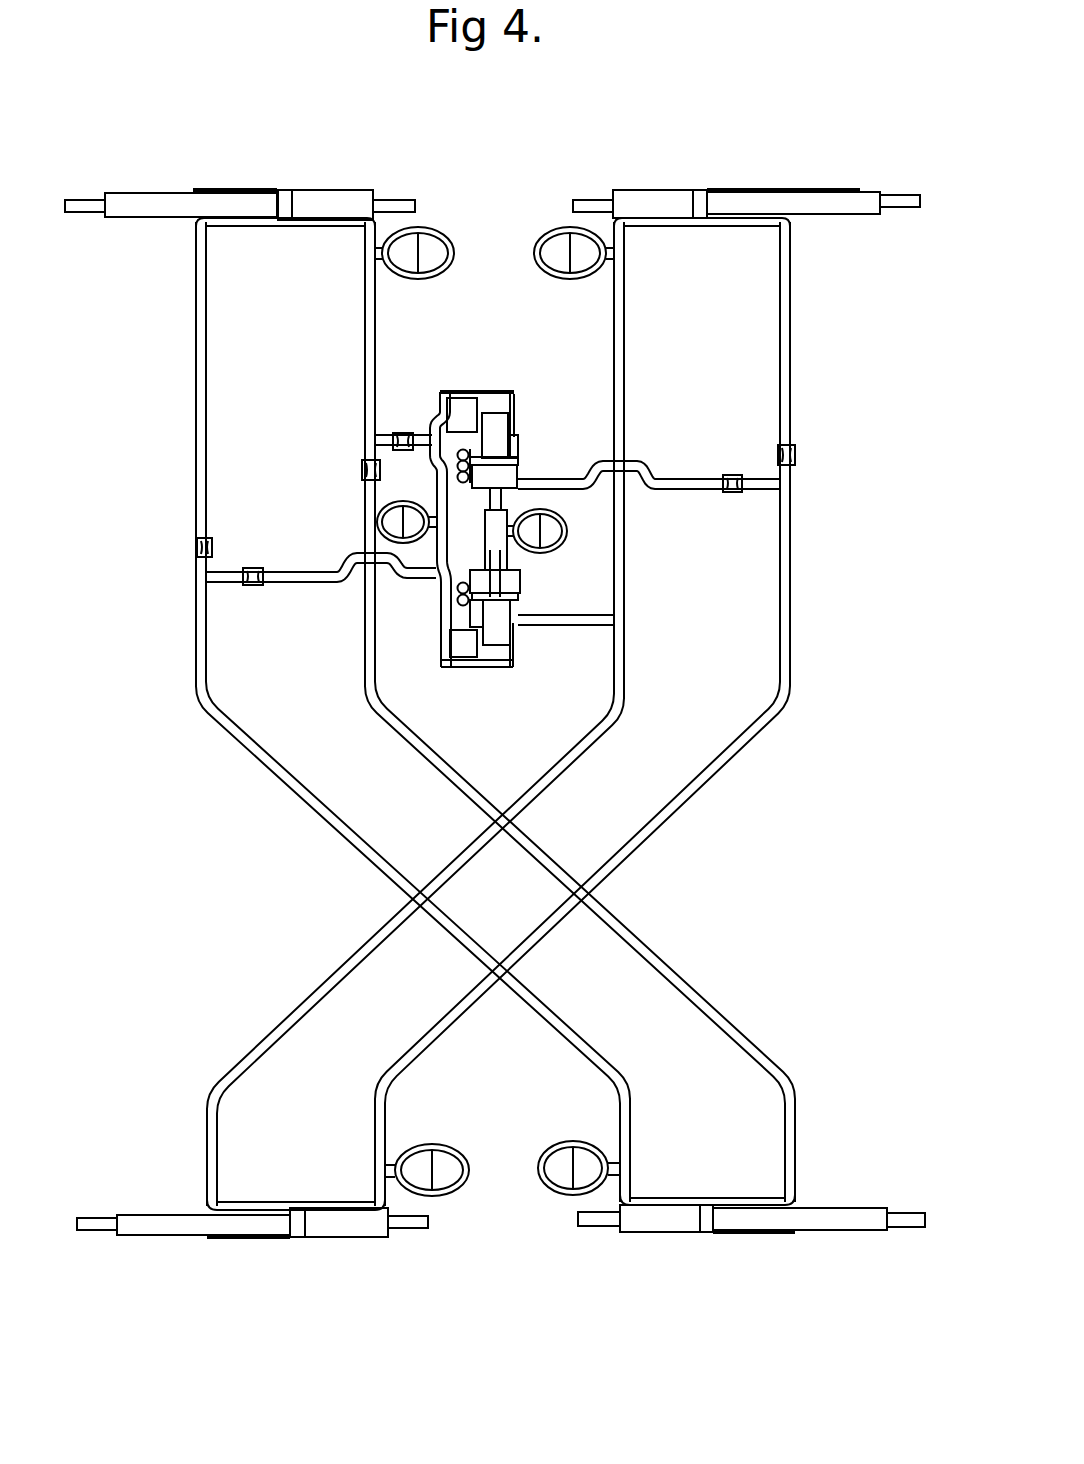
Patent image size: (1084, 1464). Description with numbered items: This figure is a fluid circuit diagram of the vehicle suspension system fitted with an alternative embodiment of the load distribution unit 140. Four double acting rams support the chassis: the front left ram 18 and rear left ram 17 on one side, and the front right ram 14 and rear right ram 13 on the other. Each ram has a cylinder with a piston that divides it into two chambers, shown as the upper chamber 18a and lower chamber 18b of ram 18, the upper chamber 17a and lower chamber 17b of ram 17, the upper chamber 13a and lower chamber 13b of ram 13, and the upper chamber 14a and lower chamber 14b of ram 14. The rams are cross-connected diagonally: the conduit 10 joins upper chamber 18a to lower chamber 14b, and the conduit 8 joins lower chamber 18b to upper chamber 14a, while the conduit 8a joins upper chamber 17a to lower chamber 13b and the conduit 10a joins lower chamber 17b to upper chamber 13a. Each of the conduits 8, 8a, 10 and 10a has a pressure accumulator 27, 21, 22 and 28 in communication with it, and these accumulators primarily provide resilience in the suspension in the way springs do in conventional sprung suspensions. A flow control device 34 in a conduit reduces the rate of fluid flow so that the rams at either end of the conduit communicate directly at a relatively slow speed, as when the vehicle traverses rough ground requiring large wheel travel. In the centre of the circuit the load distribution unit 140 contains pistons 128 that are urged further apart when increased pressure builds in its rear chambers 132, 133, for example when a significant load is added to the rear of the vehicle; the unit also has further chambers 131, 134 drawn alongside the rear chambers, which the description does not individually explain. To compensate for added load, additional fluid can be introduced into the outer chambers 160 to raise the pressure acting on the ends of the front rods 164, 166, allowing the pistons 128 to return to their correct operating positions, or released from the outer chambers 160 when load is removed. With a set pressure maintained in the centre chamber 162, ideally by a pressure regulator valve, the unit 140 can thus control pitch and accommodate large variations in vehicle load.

The conduit 8 is at (190, 350).
The conduit 8a is at (780, 388).
The conduit 10 is at (365, 362).
The conduit 10a is at (625, 330).
The rear right ram 13 is at (746, 141).
The upper chamber of ram 13 13a is at (660, 195).
The lower chamber of ram 13 13b is at (770, 190).
The front right ram 14 is at (751, 1273).
The upper chamber of ram 14 14a is at (655, 1225).
The lower chamber of ram 14 14b is at (765, 1245).
The rear left ram 17 is at (254, 1276).
The upper chamber of ram 17 17a is at (340, 1225).
The lower chamber of ram 17 17b is at (245, 1240).
The front left ram 18 is at (240, 141).
The upper chamber of ram 18 18a is at (340, 193).
The lower chamber of ram 18 18b is at (235, 190).
The pressure accumulator 21 is at (448, 1215).
The pressure accumulator 22 is at (445, 216).
The pressure accumulator 27 is at (557, 1212).
The pressure accumulator 28 is at (553, 216).
The flow control device 34 is at (195, 545).
The pistons of the load distribution unit 128 is at (520, 464).
The first chamber 131 is at (518, 438).
The rear chamber 132 is at (513, 482).
The rear chamber 133 is at (512, 580).
The fourth chamber 134 is at (477, 617).
The load distribution unit 140 is at (492, 523).
The outer chamber 160 is at (497, 400).
The centre chamber 162 is at (492, 532).
The front rod 164 is at (480, 428).
The front rod 166 is at (497, 630).